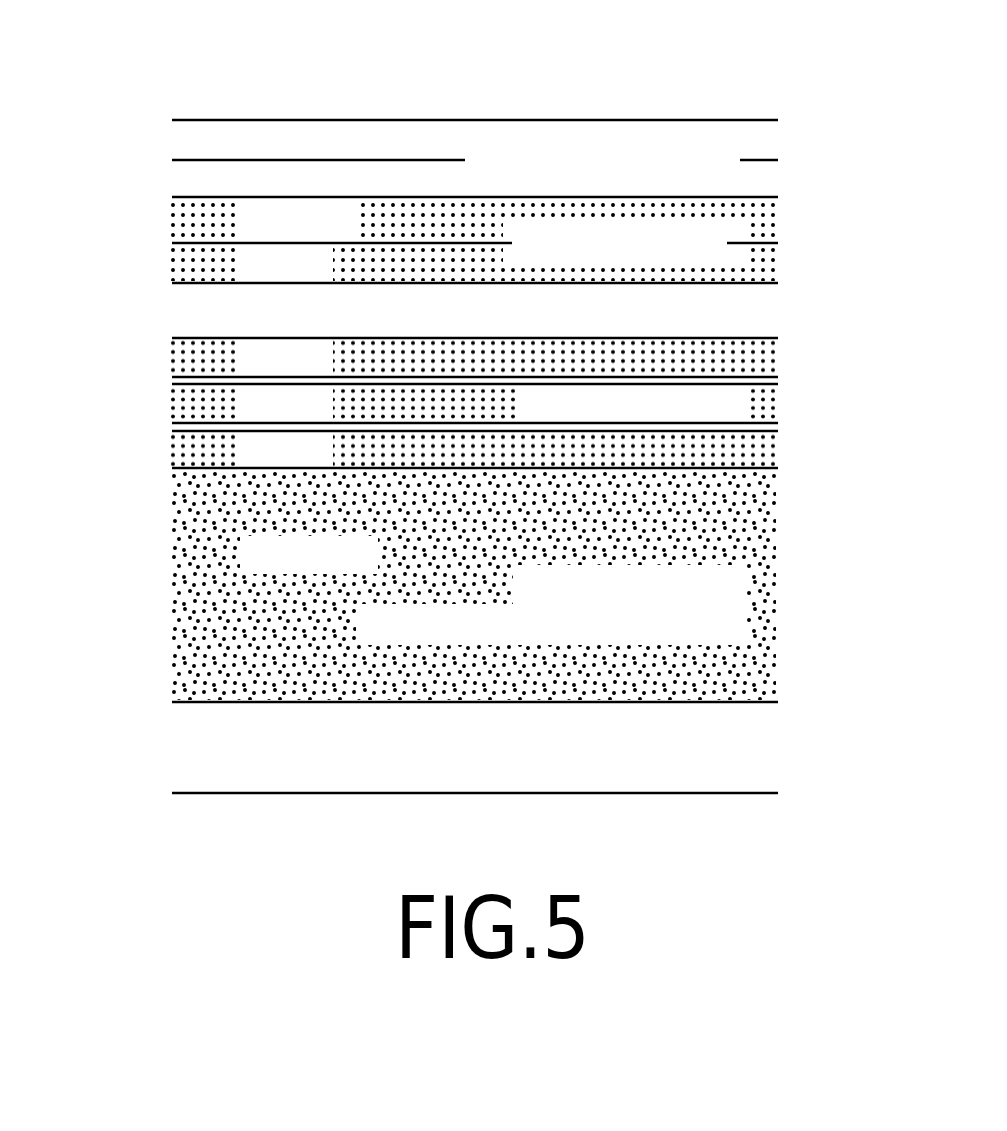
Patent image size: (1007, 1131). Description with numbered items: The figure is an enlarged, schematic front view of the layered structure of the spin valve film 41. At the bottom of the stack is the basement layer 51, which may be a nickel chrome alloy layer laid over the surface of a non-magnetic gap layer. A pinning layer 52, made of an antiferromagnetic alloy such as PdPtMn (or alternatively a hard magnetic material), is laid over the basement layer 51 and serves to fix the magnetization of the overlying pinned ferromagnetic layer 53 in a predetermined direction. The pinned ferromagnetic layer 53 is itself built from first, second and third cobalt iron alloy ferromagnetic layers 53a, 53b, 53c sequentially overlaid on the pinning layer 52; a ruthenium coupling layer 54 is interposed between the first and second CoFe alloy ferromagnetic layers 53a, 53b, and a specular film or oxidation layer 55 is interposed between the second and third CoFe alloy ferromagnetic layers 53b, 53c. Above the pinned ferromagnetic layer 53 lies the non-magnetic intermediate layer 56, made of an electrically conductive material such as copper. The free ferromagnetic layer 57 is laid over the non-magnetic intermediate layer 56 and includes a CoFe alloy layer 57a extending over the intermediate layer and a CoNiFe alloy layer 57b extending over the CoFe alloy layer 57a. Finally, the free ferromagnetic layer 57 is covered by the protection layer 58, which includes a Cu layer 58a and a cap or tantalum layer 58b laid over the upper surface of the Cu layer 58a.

The spin valve film 41 is at (453, 399).
The basement layer 51 is at (740, 702).
The pinning layer 52 is at (728, 475).
The pinned ferromagnetic layer 53 is at (467, 369).
The first CoFe alloy ferromagnetic layer 53a is at (240, 431).
The second CoFe alloy ferromagnetic layer 53b is at (220, 383).
The third CoFe alloy ferromagnetic layer 53c is at (247, 338).
The Ru coupling layer 54 is at (760, 424).
The specular film or oxidation layer 55 is at (733, 372).
The non-magnetic intermediate layer 56 is at (222, 284).
The free ferromagnetic layer 57 is at (439, 211).
The CoFe alloy layer 57a is at (210, 243).
The CoNiFe alloy layer 57b is at (210, 197).
The protection layer 58 is at (456, 121).
The Cu layer 58a is at (222, 159).
The Ta layer 58b is at (322, 120).